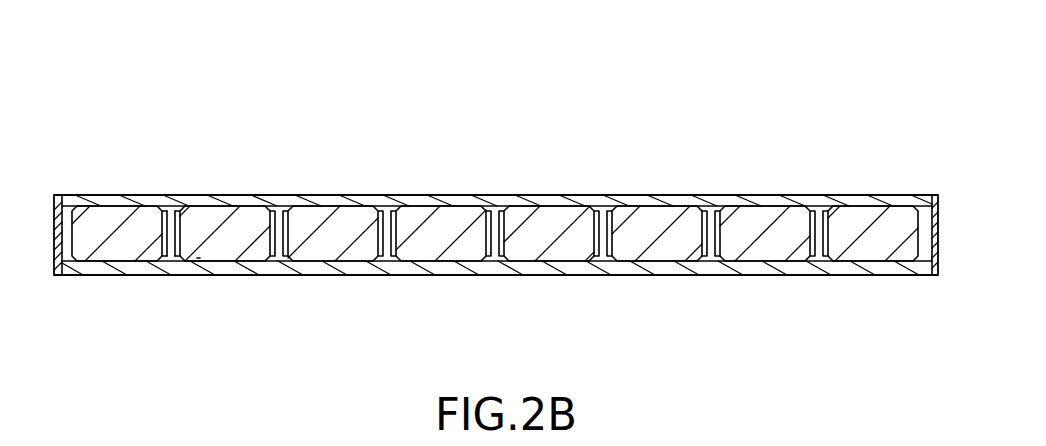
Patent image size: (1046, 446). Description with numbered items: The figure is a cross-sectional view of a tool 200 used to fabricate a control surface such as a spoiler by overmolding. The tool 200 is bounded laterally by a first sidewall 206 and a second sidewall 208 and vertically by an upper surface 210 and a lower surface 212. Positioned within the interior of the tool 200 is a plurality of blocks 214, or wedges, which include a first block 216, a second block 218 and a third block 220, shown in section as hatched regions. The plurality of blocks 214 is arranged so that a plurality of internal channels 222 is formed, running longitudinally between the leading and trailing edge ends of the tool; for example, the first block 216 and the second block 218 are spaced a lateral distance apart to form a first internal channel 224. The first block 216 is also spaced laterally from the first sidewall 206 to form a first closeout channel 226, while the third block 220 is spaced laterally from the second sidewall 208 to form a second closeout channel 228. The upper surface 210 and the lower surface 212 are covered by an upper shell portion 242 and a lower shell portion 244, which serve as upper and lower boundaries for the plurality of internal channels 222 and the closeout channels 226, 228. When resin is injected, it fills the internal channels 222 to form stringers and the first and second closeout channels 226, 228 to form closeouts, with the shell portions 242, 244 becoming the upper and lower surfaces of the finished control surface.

The tool 200 is at (179, 74).
The first sidewall 206 is at (940, 212).
The second sidewall 208 is at (58, 195).
The upper surface 210 is at (544, 178).
The lower surface 212 is at (345, 290).
The plurality of blocks 214 is at (335, 217).
The first block 216 is at (857, 255).
The second block 218 is at (760, 247).
The third block 220 is at (129, 242).
The plurality of internal channels 222 is at (492, 220).
The first internal channel 224 is at (818, 213).
The first closeout channel 226 is at (922, 253).
The second closeout channel 228 is at (62, 262).
The upper shell portion 242 is at (179, 206).
The lower shell portion 244 is at (200, 262).